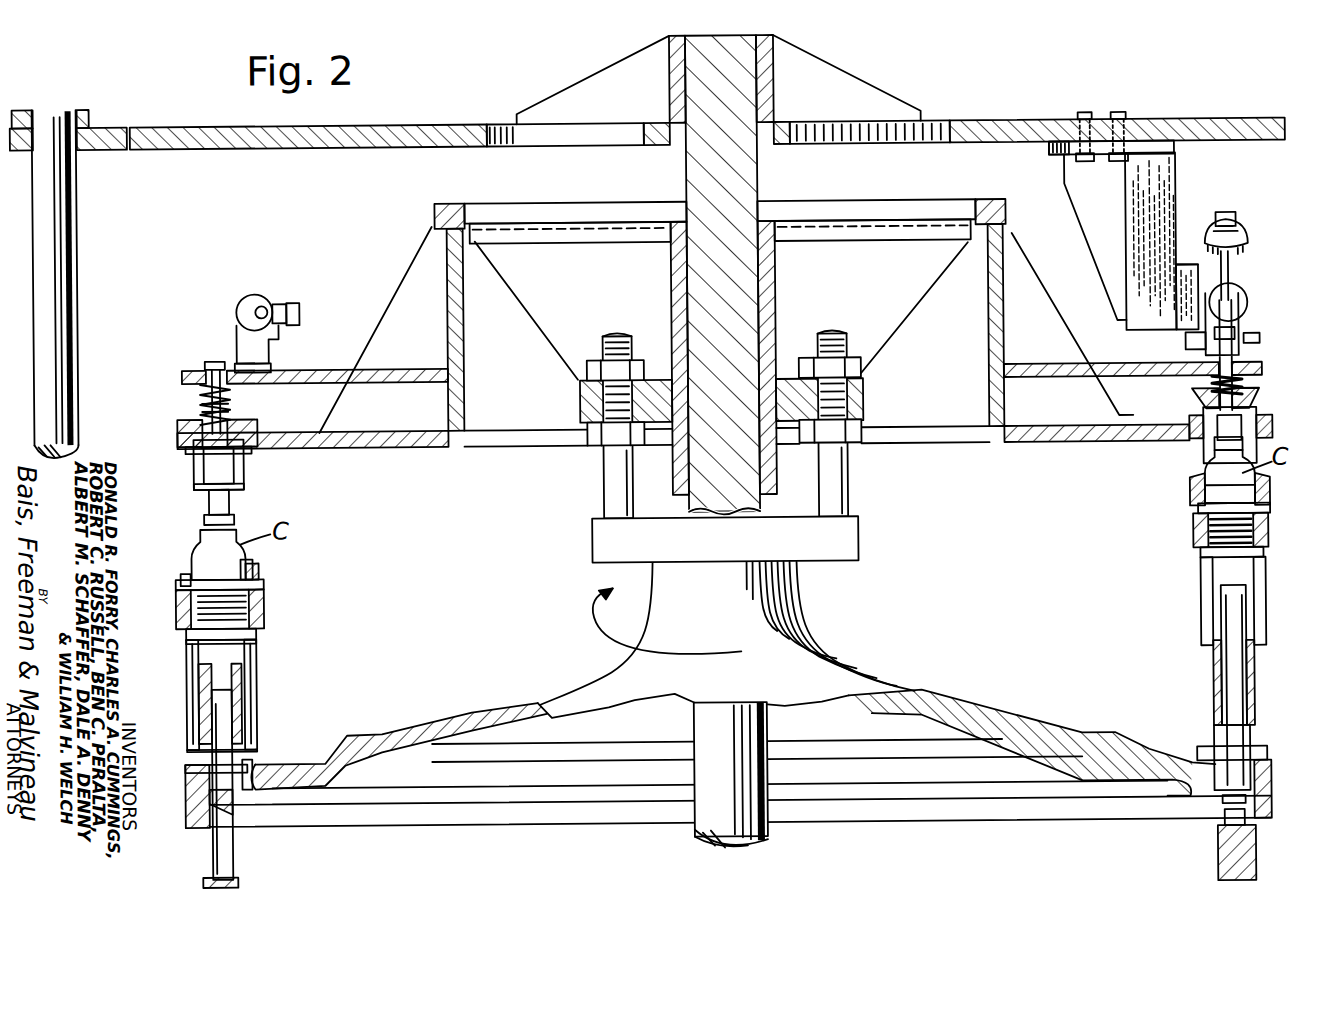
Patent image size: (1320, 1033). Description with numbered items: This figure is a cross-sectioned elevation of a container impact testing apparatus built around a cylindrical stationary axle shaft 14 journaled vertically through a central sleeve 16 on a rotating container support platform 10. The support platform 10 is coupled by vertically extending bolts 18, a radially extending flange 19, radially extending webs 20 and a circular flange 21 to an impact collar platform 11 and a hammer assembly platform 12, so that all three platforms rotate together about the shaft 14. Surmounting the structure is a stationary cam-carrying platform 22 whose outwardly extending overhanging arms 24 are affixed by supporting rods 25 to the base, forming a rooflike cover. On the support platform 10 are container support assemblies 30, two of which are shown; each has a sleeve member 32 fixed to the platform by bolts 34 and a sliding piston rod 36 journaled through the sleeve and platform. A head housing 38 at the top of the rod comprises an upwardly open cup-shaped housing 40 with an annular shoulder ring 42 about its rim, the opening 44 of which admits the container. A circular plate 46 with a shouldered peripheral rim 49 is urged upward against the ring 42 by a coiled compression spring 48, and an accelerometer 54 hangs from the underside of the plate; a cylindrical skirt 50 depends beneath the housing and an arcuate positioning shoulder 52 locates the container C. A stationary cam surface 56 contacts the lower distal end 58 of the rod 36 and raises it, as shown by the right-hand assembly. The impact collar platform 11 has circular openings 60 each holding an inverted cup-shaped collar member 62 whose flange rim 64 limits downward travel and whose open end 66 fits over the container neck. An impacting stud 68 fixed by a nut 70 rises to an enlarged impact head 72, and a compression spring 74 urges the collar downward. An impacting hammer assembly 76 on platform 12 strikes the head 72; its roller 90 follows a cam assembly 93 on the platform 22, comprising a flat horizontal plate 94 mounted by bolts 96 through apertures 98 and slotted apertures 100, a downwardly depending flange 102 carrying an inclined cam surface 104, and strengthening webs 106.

The container support platform 10 is at (417, 715).
The impact collar platform 11 is at (395, 445).
The hammer assembly platform 12 is at (377, 365).
The stationary axle shaft 14 is at (760, 174).
The central sleeve 16 is at (782, 601).
The bolts 18 is at (849, 469).
The radially extending flange 19 is at (864, 401).
The radially extending webs 20 is at (522, 291).
The circular flange 21 is at (466, 355).
The cam-carrying platform 22 is at (977, 122).
The overhanging arms 24 is at (179, 126).
The supporting rods 25 is at (65, 243).
The container support assemblies 30 is at (267, 686).
The sleeve member 32 is at (240, 726).
The bolts 34 is at (250, 756).
The piston rod 36 is at (232, 719).
The head housing 38 is at (270, 624).
The cup-shaped housing 40 is at (258, 598).
The shoulder ring 42 is at (193, 586).
The opening 44 is at (200, 571).
The circular plate 46 is at (246, 556).
The coiled compression spring 48 is at (195, 626).
The shouldered peripheral rim 49 is at (265, 581).
The cylindrical skirt 50 is at (258, 676).
The positioning shoulder 52 is at (258, 571).
The accelerometer 54 is at (200, 596).
The stationary cam surface 56 is at (238, 876).
The lower distal end 58 is at (236, 856).
The circular openings 60 is at (196, 438).
The collar member 62 is at (244, 462).
The flange rim 64 is at (182, 426).
The open end 66 is at (243, 482).
The impacting stud 68 is at (206, 401).
The nut 70 is at (210, 464).
The impact head 72 is at (213, 358).
The compression spring 74 is at (231, 403).
The impacting hammer assembly 76 is at (238, 312).
The roller 90 is at (1180, 382).
The cam assembly 93 is at (1188, 258).
The flat horizontal plate 94 is at (1056, 153).
The bolts 96 is at (1085, 112).
The apertures 98 is at (1105, 163).
The slotted apertures 100 is at (1150, 126).
The downwardly depending flange 102 is at (1172, 183).
The inclined cam surface 104 is at (1187, 326).
The webs 106 is at (1080, 227).